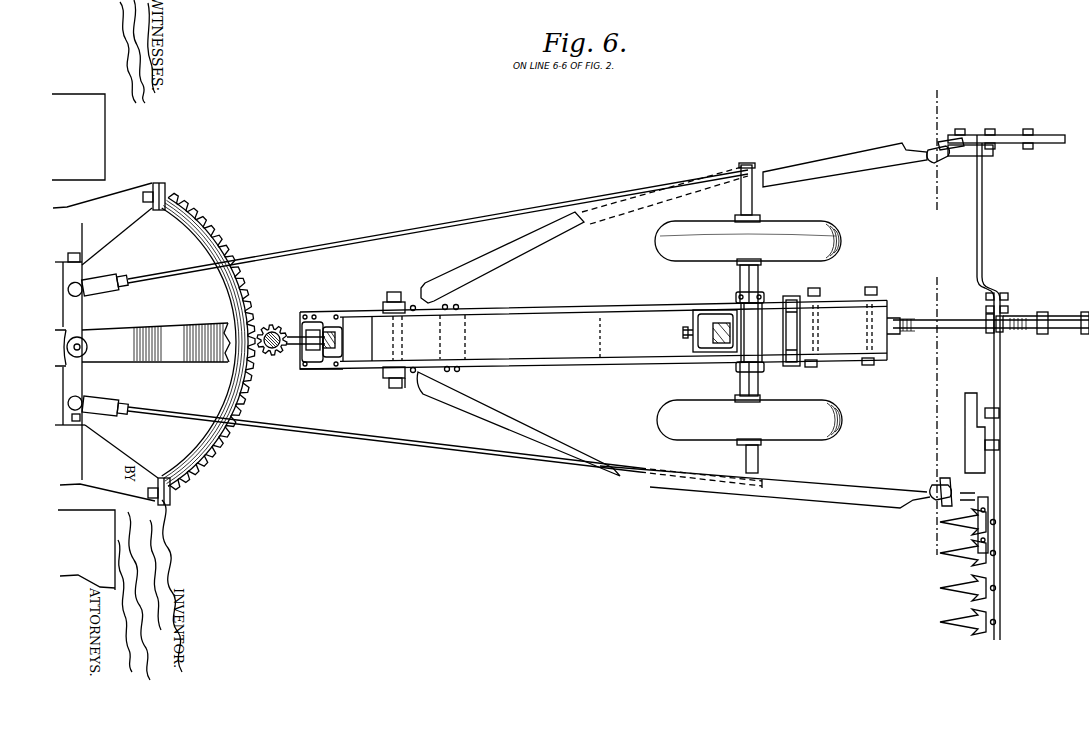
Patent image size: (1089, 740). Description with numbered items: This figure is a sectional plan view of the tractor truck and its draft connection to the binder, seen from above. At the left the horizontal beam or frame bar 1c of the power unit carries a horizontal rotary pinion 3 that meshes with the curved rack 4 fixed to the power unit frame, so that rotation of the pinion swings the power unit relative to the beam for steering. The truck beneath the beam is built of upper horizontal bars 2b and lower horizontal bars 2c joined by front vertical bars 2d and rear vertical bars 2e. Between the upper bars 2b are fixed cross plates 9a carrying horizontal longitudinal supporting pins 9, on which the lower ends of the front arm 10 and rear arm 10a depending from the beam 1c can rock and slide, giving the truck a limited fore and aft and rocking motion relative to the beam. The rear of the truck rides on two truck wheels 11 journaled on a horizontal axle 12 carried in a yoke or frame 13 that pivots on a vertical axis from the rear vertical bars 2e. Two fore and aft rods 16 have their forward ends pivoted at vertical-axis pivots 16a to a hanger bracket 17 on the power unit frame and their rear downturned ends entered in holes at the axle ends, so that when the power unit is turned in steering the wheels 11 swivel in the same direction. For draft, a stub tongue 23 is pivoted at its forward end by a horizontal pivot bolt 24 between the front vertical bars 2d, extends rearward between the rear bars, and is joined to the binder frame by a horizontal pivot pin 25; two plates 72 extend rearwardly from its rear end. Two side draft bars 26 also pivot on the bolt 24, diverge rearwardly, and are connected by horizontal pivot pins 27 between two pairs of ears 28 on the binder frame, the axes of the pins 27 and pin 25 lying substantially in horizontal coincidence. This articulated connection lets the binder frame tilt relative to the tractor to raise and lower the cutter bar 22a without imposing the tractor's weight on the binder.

The horizontal beam or frame bar 1c is at (203, 335).
The upper horizontal bars 2b is at (568, 308).
The lower horizontal bars 2c is at (516, 311).
The front vertical bars 2d is at (387, 308).
The rear vertical bars 2e is at (743, 298).
The rotary pinion 3 is at (272, 323).
The rack 4 is at (227, 242).
The supporting pins 9 is at (303, 357).
The cross plates 9a is at (303, 320).
The front arm 10 is at (330, 327).
The rear arm 10a is at (717, 340).
The truck wheels 11 is at (814, 232).
The axle 12 is at (752, 205).
The yoke or frame 13 is at (760, 279).
The fore and aft rods 16 is at (417, 228).
The pivotal connection 16a is at (84, 285).
The hanger bracket 17 is at (82, 385).
The cutter bar 22a is at (947, 593).
The stub tongue 23 is at (597, 320).
The pivot bolt 24 is at (405, 385).
The pivot pin 25 is at (942, 328).
The side draft bars 26 is at (493, 242).
The pivot pins 27 is at (928, 148).
The ears 28 is at (948, 146).
The plates 72 is at (903, 336).